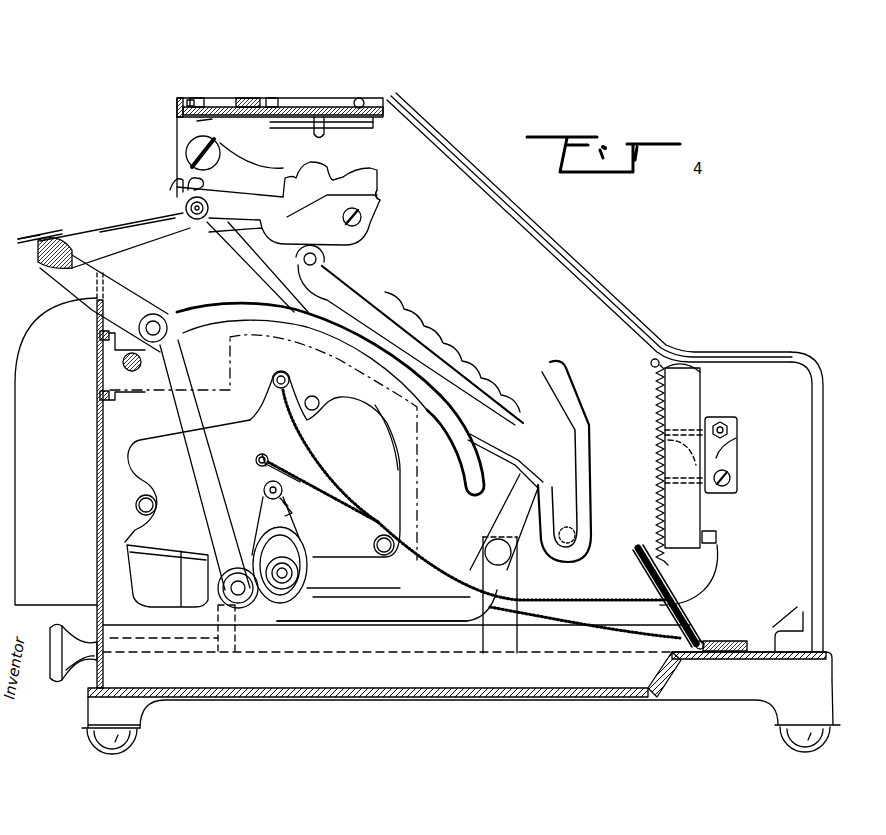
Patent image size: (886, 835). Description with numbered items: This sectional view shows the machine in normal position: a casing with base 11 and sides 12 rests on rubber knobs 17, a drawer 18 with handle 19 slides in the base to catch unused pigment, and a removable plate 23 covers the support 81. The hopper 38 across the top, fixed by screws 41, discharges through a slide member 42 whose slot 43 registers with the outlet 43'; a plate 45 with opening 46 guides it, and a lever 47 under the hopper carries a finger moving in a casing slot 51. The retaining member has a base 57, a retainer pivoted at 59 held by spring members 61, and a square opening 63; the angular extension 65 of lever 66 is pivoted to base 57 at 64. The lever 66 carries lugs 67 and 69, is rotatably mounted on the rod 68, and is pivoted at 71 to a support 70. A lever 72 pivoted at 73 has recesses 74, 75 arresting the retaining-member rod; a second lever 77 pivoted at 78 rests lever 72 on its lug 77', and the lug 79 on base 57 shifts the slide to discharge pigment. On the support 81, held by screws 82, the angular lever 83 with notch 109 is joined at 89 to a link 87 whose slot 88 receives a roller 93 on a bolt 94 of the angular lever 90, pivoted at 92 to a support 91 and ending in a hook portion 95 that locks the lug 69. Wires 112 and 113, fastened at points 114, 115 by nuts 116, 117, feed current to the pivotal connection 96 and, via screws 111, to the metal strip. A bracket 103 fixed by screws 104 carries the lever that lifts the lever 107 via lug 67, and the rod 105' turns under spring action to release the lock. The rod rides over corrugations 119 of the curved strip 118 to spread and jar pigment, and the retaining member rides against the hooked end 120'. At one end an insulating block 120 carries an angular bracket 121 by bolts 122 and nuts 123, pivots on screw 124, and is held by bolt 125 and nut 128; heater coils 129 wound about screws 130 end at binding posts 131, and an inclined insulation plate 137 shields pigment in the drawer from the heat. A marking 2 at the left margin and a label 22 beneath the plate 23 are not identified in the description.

The connecting rod 2 is at (20, 238).
The base 11 is at (145, 705).
The sides 12 is at (824, 420).
The rubber knobs 17 is at (140, 743).
The drawer 18 is at (380, 682).
The handle 19 is at (50, 648).
The curved arm 22 is at (445, 405).
The plate 23 is at (232, 337).
The hopper 38 is at (176, 103).
The screws 41 is at (367, 100).
The slide member 42 is at (275, 97).
The elongated slot 43 is at (195, 78).
The outlet 43' is at (244, 86).
The plate 45 is at (218, 121).
The opening 46 is at (272, 124).
The lever 47 is at (322, 115).
The slot 51 is at (396, 112).
The base 57 is at (106, 232).
The pivot 59 is at (210, 210).
The spring members 61 is at (147, 215).
The square opening 63 is at (112, 224).
The pivot 64 is at (38, 258).
The angular extension 65 is at (100, 305).
The lever 66 is at (172, 417).
The lug 67 is at (236, 652).
The rod 68 is at (178, 346).
The lug 69 is at (160, 312).
The support 70 is at (245, 604).
The pivot 71 is at (258, 594).
The lever 72 is at (276, 175).
The pivot 73 is at (186, 153).
The recess 74 is at (323, 177).
The recess 75 is at (352, 178).
The second lever 77 is at (338, 254).
The lug 77' is at (397, 202).
The pivot 78 is at (362, 222).
The lug 79 is at (172, 190).
The support 81 is at (387, 443).
The screws 82 is at (152, 512).
The lever 83 is at (283, 490).
The link 87 is at (262, 510).
The elongated slot 88 is at (290, 540).
The pivot 89 is at (290, 505).
The lever 90 is at (363, 624).
The support 91 is at (518, 622).
The pivot 92 is at (512, 556).
The roller 93 is at (292, 573).
The bolt 94 is at (287, 579).
The hook portion 95 is at (528, 465).
The pivot 96 is at (275, 373).
The bracket 103 is at (122, 362).
The screws 104 is at (99, 335).
The rod 105' is at (97, 366).
The lever 107 is at (196, 573).
The notch 109 is at (295, 515).
The screws 111 is at (257, 460).
The wire 112 is at (305, 432).
The wire 113 is at (296, 462).
The point 114 is at (256, 463).
The point 115 is at (288, 378).
The nut 116 is at (262, 468).
The nut 117 is at (297, 392).
The curved metal strip 118 is at (400, 318).
The corrugations 119 is at (255, 264).
The block 120 is at (714, 456).
The hooked end portion 120' is at (217, 191).
The bracket 121 is at (738, 450).
The bolts 122 is at (656, 440).
The nuts 123 is at (738, 439).
The screw 124 is at (731, 481).
The bolt 125 is at (717, 418).
The nut 128 is at (728, 430).
The heater coils 129 is at (664, 462).
The screws 130 is at (652, 366).
The binding posts 131 is at (718, 540).
The insulation plate 137 is at (690, 612).